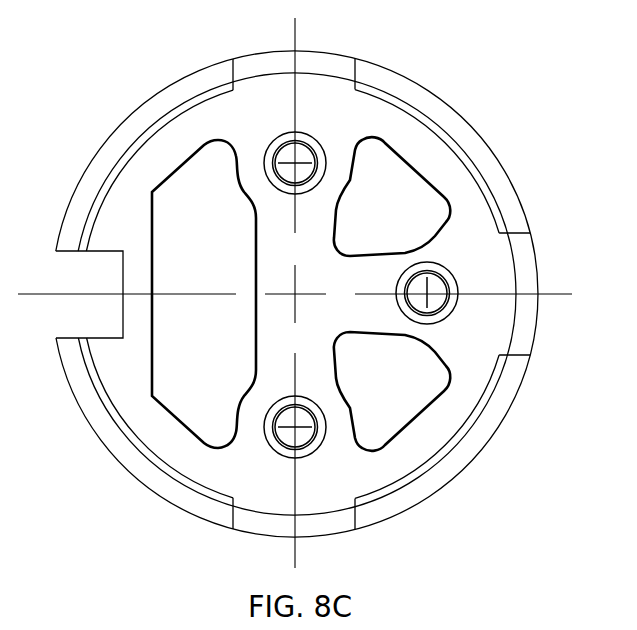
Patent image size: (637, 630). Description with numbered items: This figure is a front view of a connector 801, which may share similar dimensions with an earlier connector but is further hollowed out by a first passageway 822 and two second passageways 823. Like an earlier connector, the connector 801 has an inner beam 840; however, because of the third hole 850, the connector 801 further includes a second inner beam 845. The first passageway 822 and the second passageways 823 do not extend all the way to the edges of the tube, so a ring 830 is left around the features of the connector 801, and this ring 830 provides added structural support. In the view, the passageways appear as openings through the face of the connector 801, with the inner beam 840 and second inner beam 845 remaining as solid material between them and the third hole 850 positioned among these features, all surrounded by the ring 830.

The connector 801 is at (406, 47).
The ring 830 is at (142, 147).
The first passageway 822 is at (165, 390).
The inner beam 840 is at (268, 272).
The second passageways 823 is at (415, 188).
The second inner beam 845 is at (357, 316).
The third hole 850 is at (283, 135).